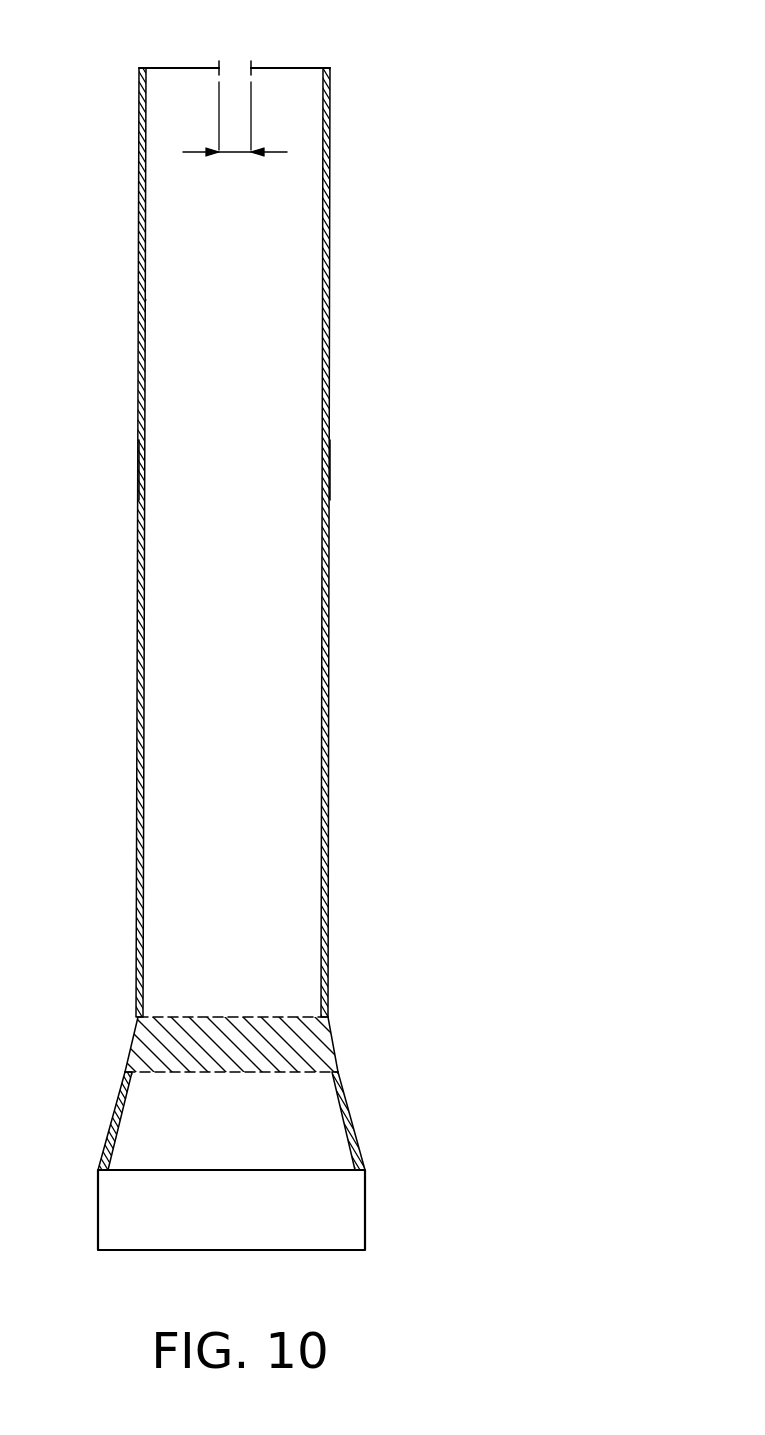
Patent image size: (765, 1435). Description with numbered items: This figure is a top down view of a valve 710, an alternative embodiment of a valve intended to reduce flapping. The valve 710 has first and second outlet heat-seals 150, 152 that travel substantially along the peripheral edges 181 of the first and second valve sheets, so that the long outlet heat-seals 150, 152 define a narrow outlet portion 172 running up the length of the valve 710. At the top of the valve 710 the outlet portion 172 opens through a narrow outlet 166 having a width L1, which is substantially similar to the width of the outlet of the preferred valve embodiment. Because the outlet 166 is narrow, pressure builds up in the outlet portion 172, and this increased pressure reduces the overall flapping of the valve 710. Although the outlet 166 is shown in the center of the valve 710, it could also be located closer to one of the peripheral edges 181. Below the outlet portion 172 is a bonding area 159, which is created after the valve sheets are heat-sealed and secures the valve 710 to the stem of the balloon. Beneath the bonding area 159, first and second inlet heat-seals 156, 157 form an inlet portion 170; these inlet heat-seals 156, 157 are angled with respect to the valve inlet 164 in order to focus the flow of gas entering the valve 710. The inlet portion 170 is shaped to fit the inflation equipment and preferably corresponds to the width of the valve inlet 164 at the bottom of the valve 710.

The valve 710 is at (423, 320).
The first outlet heat-seal 150 is at (332, 210).
The second outlet heat-seal 152 is at (138, 212).
The outlet portion 172 is at (168, 288).
The peripheral edges 181 is at (137, 462).
The outlet 166 is at (235, 66).
The width of outlet L1 is at (235, 154).
The bonding area 159 is at (336, 1050).
The second inlet heat-seal 157 is at (117, 1095).
The first inlet heat-seal 156 is at (347, 1096).
The inlet portion 170 is at (320, 1136).
The valve inlet 164 is at (232, 1251).